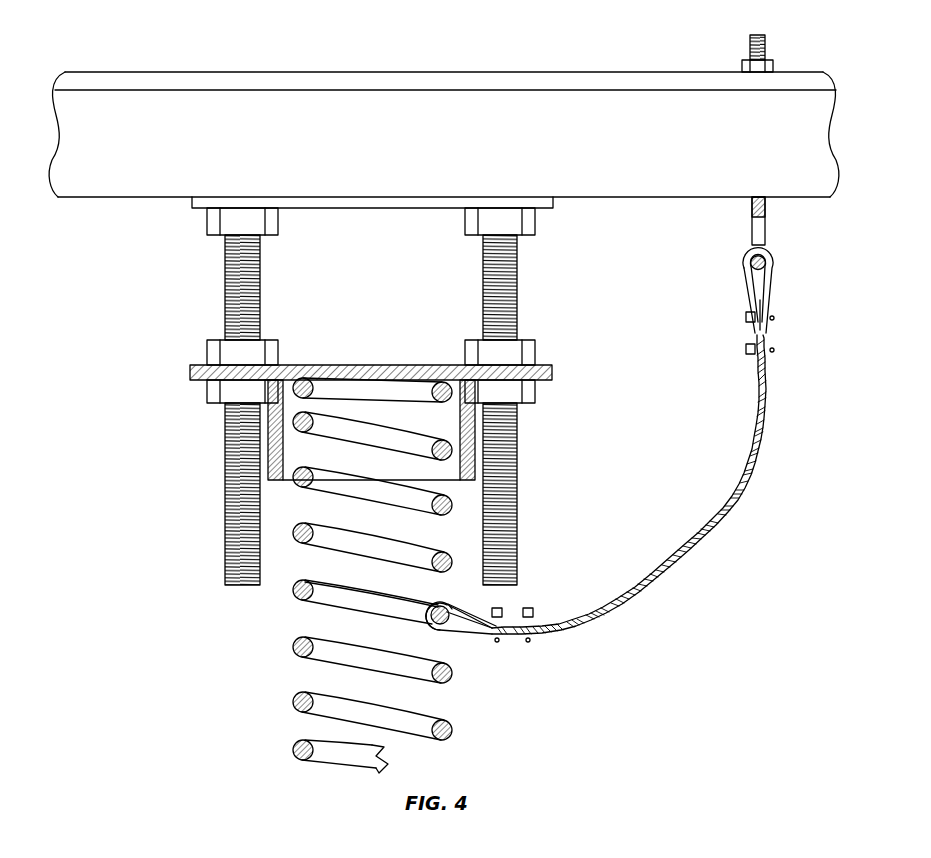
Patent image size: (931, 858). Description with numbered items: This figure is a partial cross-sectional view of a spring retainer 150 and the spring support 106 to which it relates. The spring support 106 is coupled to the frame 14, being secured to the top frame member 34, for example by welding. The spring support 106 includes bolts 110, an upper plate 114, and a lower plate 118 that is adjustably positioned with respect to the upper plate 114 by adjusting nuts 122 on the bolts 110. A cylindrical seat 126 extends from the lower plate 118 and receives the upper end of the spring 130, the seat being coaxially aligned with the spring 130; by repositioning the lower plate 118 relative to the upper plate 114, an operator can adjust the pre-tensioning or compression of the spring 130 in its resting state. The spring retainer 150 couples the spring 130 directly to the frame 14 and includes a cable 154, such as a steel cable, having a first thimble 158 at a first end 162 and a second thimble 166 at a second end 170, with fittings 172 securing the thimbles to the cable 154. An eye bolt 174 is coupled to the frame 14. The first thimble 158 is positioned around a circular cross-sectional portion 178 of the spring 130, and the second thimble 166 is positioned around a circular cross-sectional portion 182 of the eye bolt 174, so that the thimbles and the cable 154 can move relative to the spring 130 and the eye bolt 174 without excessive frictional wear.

The frame 14 is at (444, 115).
The top frame member 34 is at (400, 115).
The spring support 106 is at (128, 449).
The bolts 110 is at (243, 291).
The upper plate 114 is at (195, 205).
The lower plate 118 is at (192, 373).
The nuts 122 is at (225, 352).
The cylindrical seat 126 is at (268, 480).
The spring 130 is at (300, 749).
The spring retainer 150 is at (676, 640).
The cable 154 is at (686, 551).
The first thimble 158 is at (455, 633).
The first end 162 is at (490, 640).
The second thimble 166 is at (767, 290).
The second end 170 is at (771, 318).
The fittings 172 is at (499, 616).
The eye bolt 174 is at (766, 205).
The circular cross-sectional portion 178 is at (422, 608).
The circular cross-sectional portion 182 is at (751, 273).